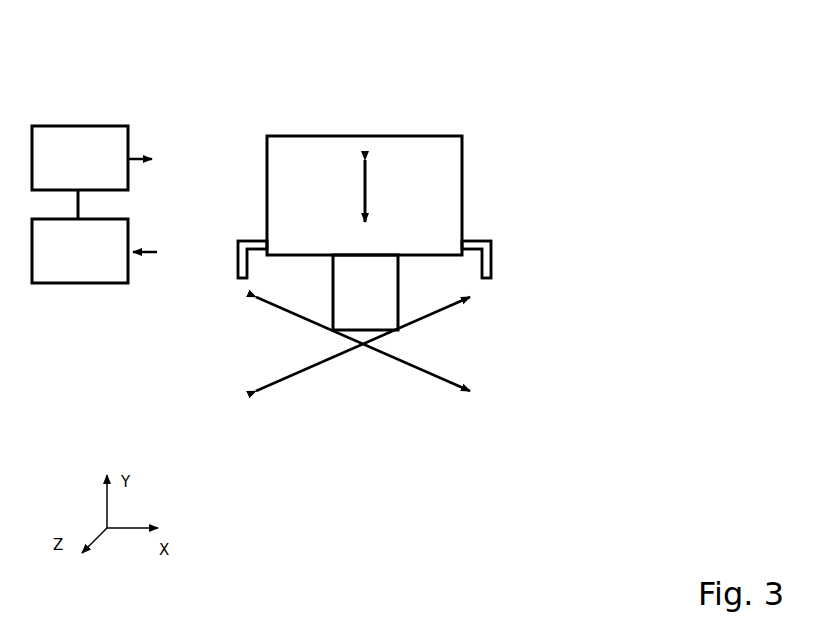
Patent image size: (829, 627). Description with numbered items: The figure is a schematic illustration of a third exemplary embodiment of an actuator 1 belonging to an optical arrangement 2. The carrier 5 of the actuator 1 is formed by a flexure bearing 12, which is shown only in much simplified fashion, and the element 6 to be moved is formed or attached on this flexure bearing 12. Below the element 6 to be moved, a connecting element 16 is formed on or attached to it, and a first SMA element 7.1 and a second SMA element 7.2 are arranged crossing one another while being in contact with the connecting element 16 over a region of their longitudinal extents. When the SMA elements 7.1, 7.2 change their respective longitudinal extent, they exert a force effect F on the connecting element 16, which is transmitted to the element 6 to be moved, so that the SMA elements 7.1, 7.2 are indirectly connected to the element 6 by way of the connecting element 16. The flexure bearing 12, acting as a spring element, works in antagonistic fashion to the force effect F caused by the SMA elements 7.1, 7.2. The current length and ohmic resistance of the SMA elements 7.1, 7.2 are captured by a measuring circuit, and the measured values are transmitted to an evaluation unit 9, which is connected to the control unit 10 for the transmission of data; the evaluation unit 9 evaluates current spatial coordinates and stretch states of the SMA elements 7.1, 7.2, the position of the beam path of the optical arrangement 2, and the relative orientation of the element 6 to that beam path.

The actuator 1 is at (229, 86).
The optical arrangement 2 is at (163, 52).
The carrier 5 is at (364, 259).
The element to be moved 6 is at (383, 134).
The first SMA element 7.1 is at (423, 325).
The second SMA element 7.2 is at (452, 387).
The evaluation unit 9 is at (84, 262).
The control unit 10 is at (88, 169).
The flexure bearing 12 is at (255, 240).
The connecting element 16 is at (377, 298).
The force effect F is at (370, 181).